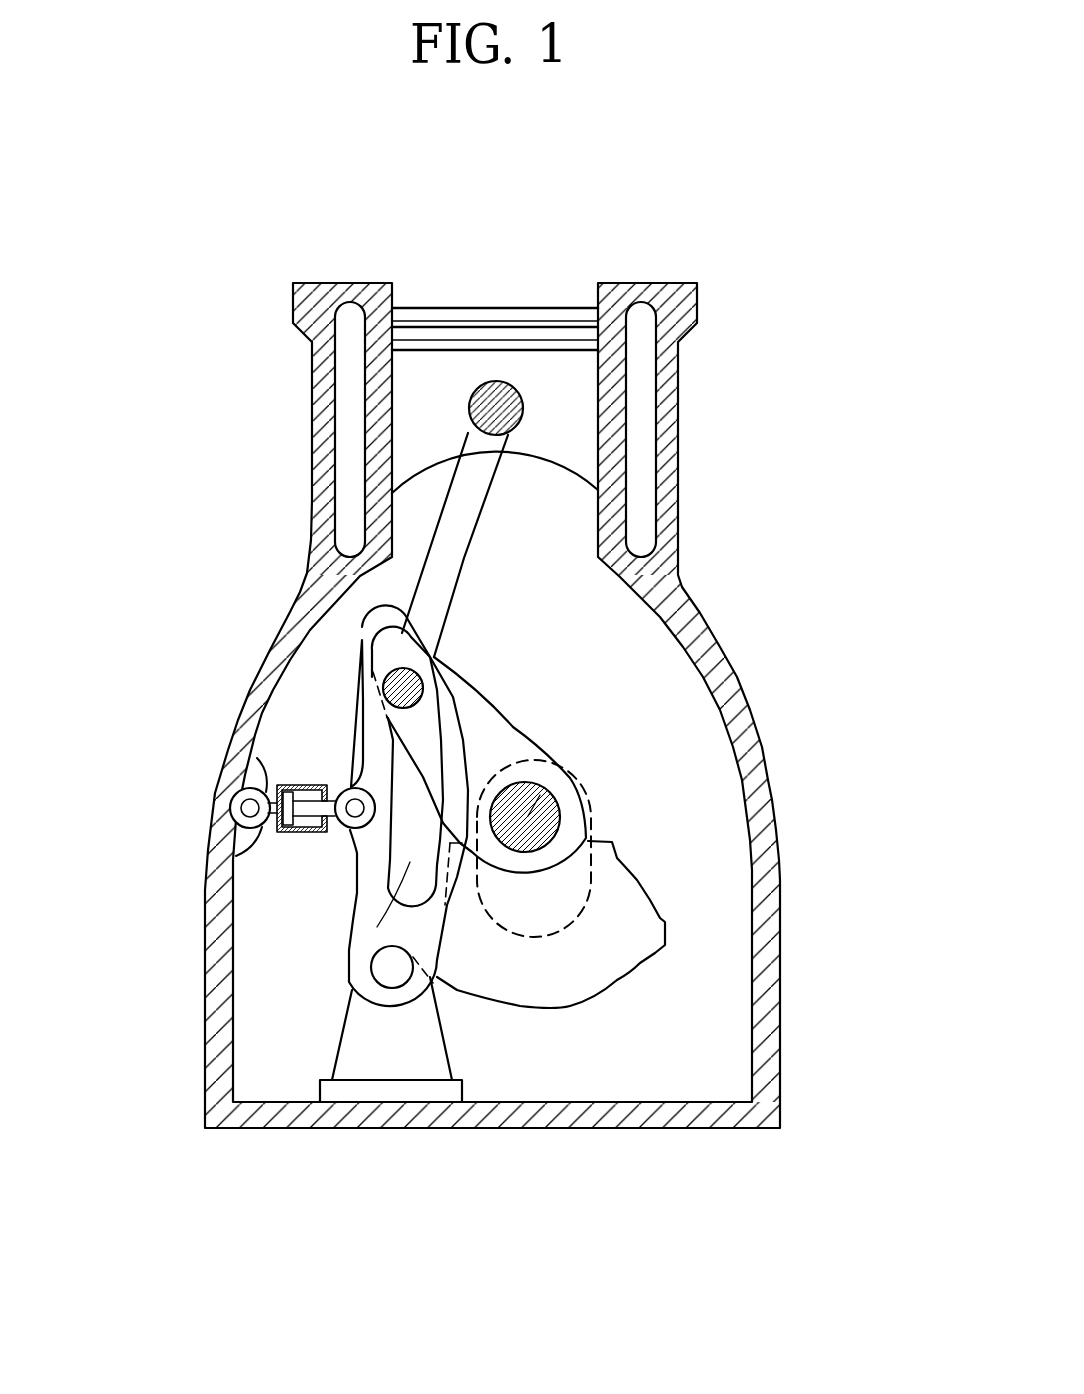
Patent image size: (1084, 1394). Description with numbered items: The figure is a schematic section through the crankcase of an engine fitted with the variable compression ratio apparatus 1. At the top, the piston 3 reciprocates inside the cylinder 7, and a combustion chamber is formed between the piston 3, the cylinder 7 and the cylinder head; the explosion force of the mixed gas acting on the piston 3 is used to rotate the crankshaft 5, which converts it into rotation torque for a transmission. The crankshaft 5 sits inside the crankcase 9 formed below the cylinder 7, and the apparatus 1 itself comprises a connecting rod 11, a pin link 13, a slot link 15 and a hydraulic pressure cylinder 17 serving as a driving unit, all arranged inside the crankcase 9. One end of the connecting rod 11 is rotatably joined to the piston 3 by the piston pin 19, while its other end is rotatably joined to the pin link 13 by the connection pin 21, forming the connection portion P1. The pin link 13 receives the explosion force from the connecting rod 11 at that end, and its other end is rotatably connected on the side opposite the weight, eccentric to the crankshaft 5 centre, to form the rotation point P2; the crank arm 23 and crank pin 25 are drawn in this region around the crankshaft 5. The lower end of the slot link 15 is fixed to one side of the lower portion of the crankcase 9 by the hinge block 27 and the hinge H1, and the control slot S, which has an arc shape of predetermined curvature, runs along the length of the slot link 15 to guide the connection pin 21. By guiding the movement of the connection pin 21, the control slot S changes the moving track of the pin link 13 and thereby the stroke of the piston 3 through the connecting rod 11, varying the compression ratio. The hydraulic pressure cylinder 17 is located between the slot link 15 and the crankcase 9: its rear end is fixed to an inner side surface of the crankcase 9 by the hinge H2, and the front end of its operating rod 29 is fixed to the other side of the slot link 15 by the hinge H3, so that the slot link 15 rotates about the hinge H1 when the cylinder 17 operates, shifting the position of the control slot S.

The variable compression ratio apparatus 1 is at (461, 725).
The piston 3 is at (563, 377).
The crankshaft 5 is at (593, 873).
The cylinder 7 is at (612, 420).
The crankcase 9 is at (750, 743).
The connecting rod 11 is at (448, 538).
The pin link 13 is at (500, 740).
The slot link 15 is at (363, 663).
The hydraulic pressure cylinder 17 is at (285, 830).
The piston pin 19 is at (496, 381).
The connection pin 21 is at (375, 628).
The crank arm 23 is at (628, 945).
The crank pin 25 is at (505, 826).
The hinge block 27 is at (433, 1068).
The operating rod 29 is at (312, 813).
The connection portion P1 is at (424, 686).
The rotation point P2 is at (540, 795).
The hinge H1 is at (393, 977).
The hinge H2 is at (244, 808).
The hinge H3 is at (347, 833).
The control slot S is at (377, 927).